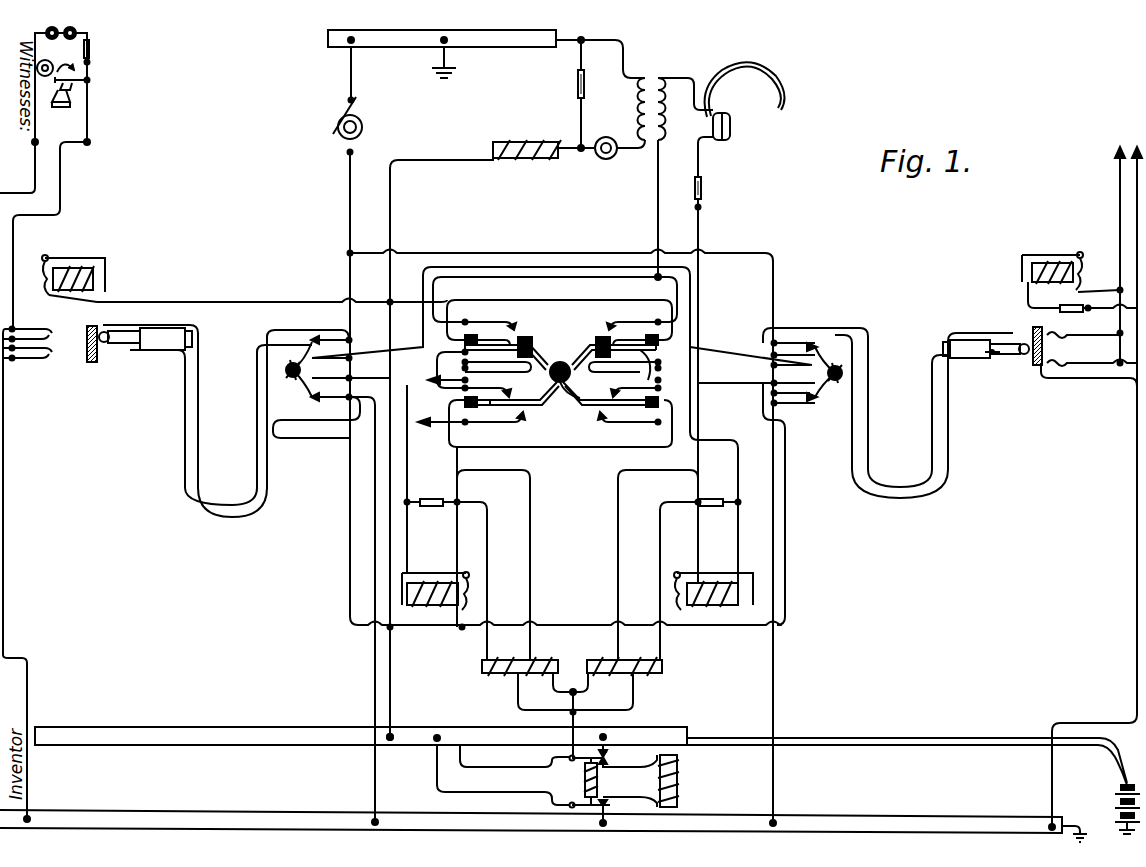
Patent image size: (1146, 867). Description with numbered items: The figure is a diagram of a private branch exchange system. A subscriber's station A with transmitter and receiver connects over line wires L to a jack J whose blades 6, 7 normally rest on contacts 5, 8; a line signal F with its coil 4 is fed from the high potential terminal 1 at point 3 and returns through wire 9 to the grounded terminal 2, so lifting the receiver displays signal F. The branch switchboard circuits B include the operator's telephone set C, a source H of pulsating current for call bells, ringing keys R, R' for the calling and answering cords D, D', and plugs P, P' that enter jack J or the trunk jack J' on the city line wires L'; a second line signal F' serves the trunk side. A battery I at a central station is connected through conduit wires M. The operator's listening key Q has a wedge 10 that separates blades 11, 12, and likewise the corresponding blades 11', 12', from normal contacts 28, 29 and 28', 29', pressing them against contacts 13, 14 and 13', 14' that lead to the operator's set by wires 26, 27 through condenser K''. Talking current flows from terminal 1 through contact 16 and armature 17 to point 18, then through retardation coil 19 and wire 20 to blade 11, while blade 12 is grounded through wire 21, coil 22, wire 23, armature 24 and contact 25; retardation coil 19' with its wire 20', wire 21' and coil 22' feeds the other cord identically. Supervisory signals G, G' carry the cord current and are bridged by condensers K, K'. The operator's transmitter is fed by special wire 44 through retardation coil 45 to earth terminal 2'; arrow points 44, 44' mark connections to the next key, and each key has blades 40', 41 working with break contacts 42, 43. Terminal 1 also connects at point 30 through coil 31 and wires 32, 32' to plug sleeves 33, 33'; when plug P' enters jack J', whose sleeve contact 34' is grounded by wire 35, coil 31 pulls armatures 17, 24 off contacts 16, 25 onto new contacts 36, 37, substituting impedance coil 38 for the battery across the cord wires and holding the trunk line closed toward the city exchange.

The high potential battery terminal 1 is at (340, 736).
The grounded terminal 2 is at (543, 815).
The earth terminal 2' is at (442, 54).
The point 3 is at (228, 306).
The coil 4 is at (73, 308).
The contact 5 is at (35, 341).
The blade 6 is at (60, 325).
The blade 7 is at (32, 366).
The contact 8 is at (37, 351).
The wire 9 is at (29, 688).
The wedge 10 is at (513, 393).
The blade 11 is at (519, 410).
The blade 11' is at (609, 405).
The blade 12 is at (516, 353).
The blade 12' is at (614, 339).
The contact 13 is at (560, 423).
The contact 13' is at (619, 426).
The contact 14 is at (559, 320).
The contact 14' is at (634, 331).
The contact 16 is at (608, 757).
The armature 17 is at (575, 738).
The point 18 is at (580, 693).
The retardation coil 19 is at (519, 680).
The retardation coil 19' is at (631, 680).
The wire 20 is at (501, 585).
The conductor 20' is at (661, 581).
The wire 21 is at (512, 553).
The conductor 21' is at (658, 565).
The coil 22 is at (542, 673).
The coil 22' is at (606, 673).
The wire 23 is at (548, 757).
The armature 24 is at (555, 805).
The contact 25 is at (607, 823).
The wire 26 is at (526, 266).
The wire 27 is at (563, 283).
The contact 28 is at (482, 379).
The contact 28' is at (636, 398).
The contact 29 is at (487, 333).
The contact 29' is at (635, 359).
The point 30 is at (438, 736).
The coil 31 is at (585, 781).
The wire 32 is at (546, 584).
The wire 32' is at (805, 522).
The sleeve 33 is at (124, 362).
The sleeve 33' is at (993, 368).
The sleeve contact 34' is at (1074, 367).
The wire 35 is at (1136, 597).
The contact point 36 is at (628, 772).
The contact point 37 is at (612, 805).
The impedance coil 38 is at (678, 781).
The contact spring 40' is at (497, 374).
The blade 41 is at (625, 378).
The break contact 42 is at (490, 377).
The break contact 43 is at (573, 392).
The special feed wire 44 is at (440, 449).
The arrow point 44' is at (438, 430).
The retardation coil 45 is at (527, 128).
The subscriber's station A is at (70, 86).
The branch exchange switchboard circuits B is at (529, 194).
The operator's telephone set C is at (676, 167).
The calling cord D is at (226, 421).
The answering cord D' is at (888, 413).
The line signal F is at (73, 264).
The line signal F' is at (1079, 271).
The supervisory signal G is at (435, 580).
The supervisory signal G' is at (713, 580).
The source of alternating current H is at (359, 126).
The battery I is at (1112, 809).
The jack J is at (91, 355).
The trunk line jack J' is at (1050, 361).
The condenser K is at (446, 479).
The condenser K' is at (718, 514).
The condenser K'' is at (710, 215).
The line wires L is at (43, 235).
The trunk line wires L' is at (1097, 487).
The conduit wires M is at (868, 736).
The plug P is at (145, 325).
The plug P' is at (986, 334).
The listening key Q is at (560, 354).
The ringing key R is at (331, 383).
The ringing key R' is at (770, 483).